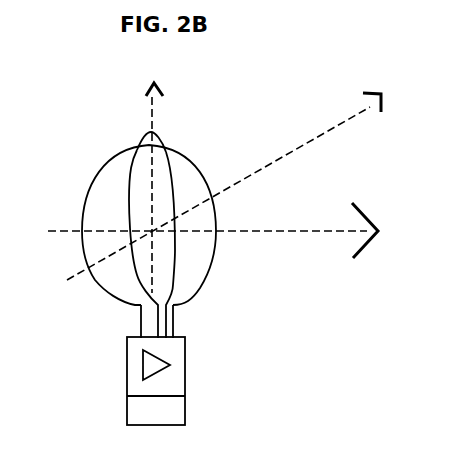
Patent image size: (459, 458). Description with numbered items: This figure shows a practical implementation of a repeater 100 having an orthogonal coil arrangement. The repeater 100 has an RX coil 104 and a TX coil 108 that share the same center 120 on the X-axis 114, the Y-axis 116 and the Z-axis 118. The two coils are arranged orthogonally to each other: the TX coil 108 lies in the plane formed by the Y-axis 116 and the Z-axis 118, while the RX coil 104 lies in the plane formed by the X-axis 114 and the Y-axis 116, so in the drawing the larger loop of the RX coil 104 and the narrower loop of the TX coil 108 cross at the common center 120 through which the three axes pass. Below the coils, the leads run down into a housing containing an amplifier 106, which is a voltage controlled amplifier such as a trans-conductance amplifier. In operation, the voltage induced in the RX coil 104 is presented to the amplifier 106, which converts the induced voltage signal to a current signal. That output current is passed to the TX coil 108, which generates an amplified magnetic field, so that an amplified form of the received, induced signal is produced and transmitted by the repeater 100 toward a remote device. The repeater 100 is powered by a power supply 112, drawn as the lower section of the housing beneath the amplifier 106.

The repeater 100 is at (209, 125).
The RX coil 104 is at (83, 250).
The amplifier 106 is at (186, 378).
The TX coil 108 is at (144, 134).
The power supply 112 is at (186, 414).
The X-axis 114 is at (343, 221).
The Y-axis 116 is at (152, 103).
The Z-axis 118 is at (330, 125).
The center 120 is at (153, 231).